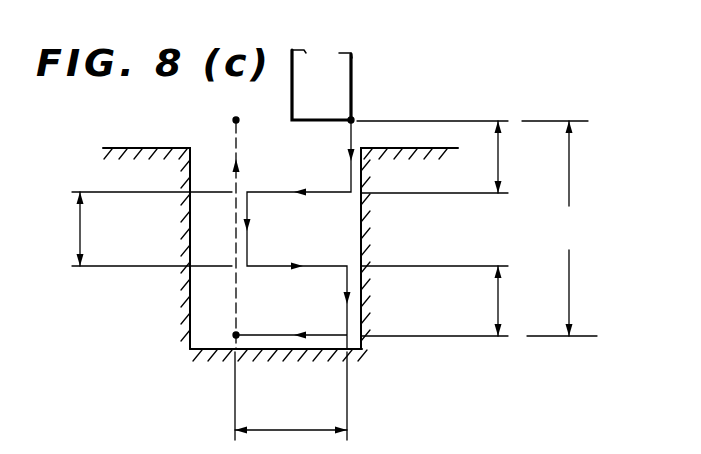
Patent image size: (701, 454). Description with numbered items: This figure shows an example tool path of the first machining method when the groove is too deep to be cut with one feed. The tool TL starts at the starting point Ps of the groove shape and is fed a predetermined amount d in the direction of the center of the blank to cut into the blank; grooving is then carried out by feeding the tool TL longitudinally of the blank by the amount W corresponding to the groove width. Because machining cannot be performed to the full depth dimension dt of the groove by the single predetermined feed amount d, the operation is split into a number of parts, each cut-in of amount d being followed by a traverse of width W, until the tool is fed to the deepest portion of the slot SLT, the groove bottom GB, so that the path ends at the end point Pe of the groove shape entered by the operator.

The tool TL is at (335, 70).
The starting point Ps is at (370, 106).
The end point Pe is at (220, 222).
The slot SLT is at (198, 294).
The groove bottom GB is at (205, 358).
The predetermined feed amount d is at (289, 228).
The depth dimension of the groove dt is at (559, 228).
The groove width amount W is at (291, 396).